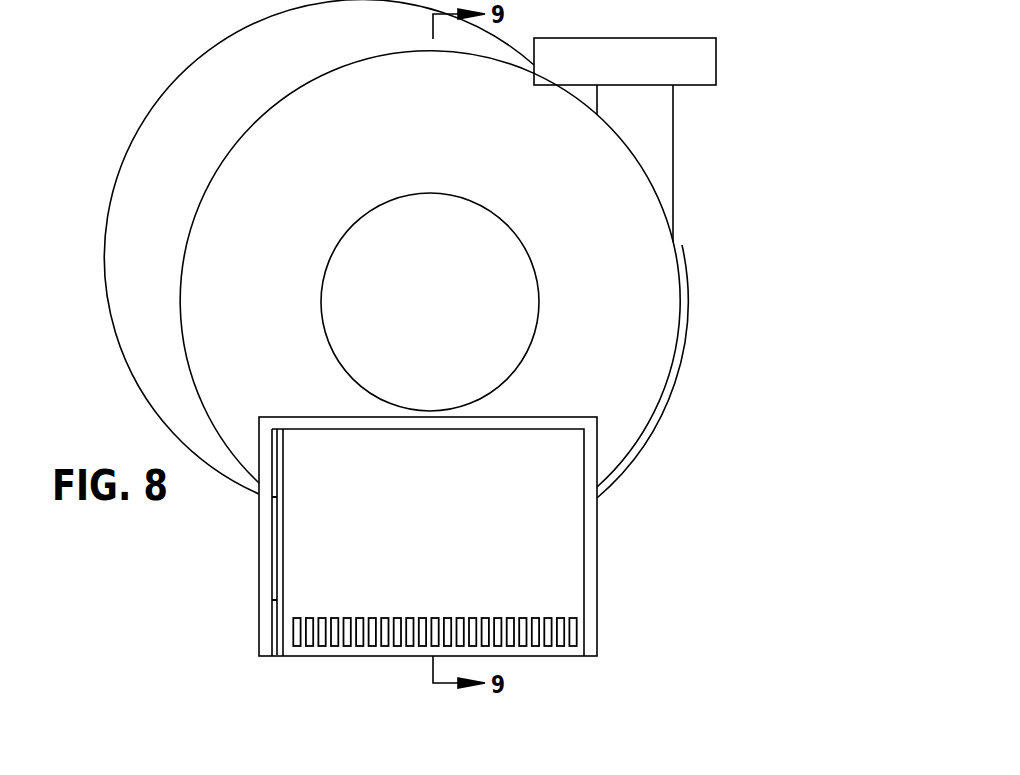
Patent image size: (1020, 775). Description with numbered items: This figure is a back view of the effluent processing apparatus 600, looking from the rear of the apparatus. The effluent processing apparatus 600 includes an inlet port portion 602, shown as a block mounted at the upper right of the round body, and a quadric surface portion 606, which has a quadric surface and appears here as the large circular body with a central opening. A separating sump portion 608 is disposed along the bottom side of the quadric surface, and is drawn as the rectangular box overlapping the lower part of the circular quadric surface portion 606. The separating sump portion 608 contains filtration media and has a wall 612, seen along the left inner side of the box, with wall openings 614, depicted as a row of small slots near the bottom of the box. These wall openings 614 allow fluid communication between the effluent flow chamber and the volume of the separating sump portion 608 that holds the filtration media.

The effluent processing apparatus 600 is at (752, 290).
The inlet port portion 602 is at (672, 38).
The quadric surface portion 606 is at (637, 308).
The separating sump portion 608 is at (615, 527).
The wall 612 is at (322, 533).
The wall openings 614 is at (347, 630).